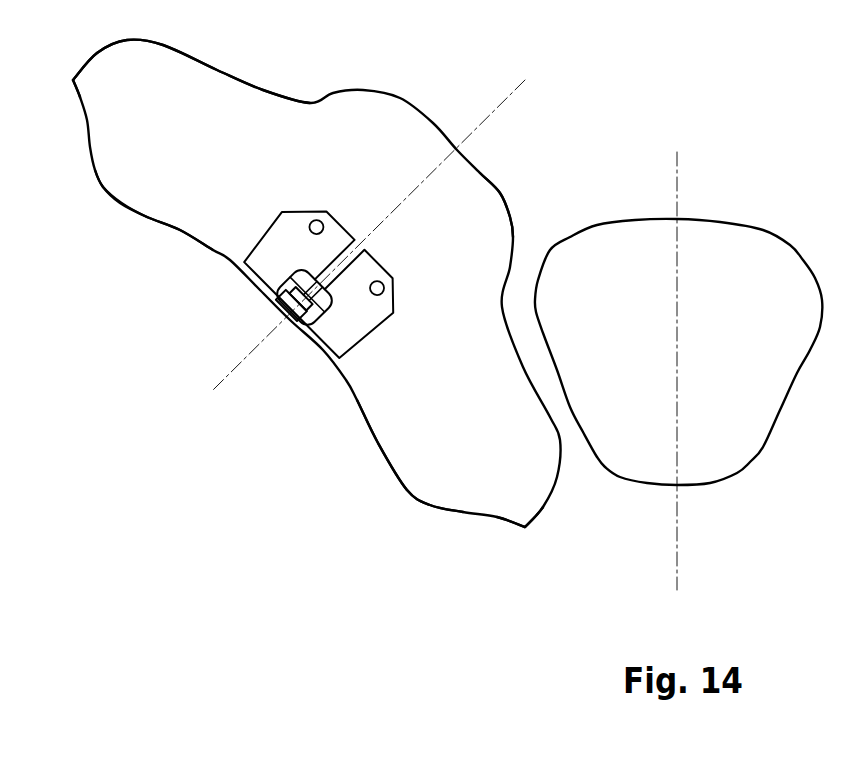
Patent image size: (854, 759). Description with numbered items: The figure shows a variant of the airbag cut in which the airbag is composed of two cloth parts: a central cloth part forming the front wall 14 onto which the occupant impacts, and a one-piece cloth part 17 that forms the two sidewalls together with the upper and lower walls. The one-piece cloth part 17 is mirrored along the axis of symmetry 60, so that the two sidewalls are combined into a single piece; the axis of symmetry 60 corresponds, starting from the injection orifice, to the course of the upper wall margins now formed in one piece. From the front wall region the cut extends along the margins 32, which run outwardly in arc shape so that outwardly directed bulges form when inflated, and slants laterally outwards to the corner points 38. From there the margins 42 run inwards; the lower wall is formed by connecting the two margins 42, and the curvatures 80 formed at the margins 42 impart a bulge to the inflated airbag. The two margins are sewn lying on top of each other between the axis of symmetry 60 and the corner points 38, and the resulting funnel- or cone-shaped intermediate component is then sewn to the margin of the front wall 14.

The front wall 14 is at (726, 359).
The one-piece cloth part 17 is at (280, 160).
The margin 32 is at (220, 68).
The lowermost corner point 38 is at (70, 86).
The margin 42 is at (177, 237).
The axis of symmetry 60 is at (682, 157).
The curvature 80 is at (130, 195).